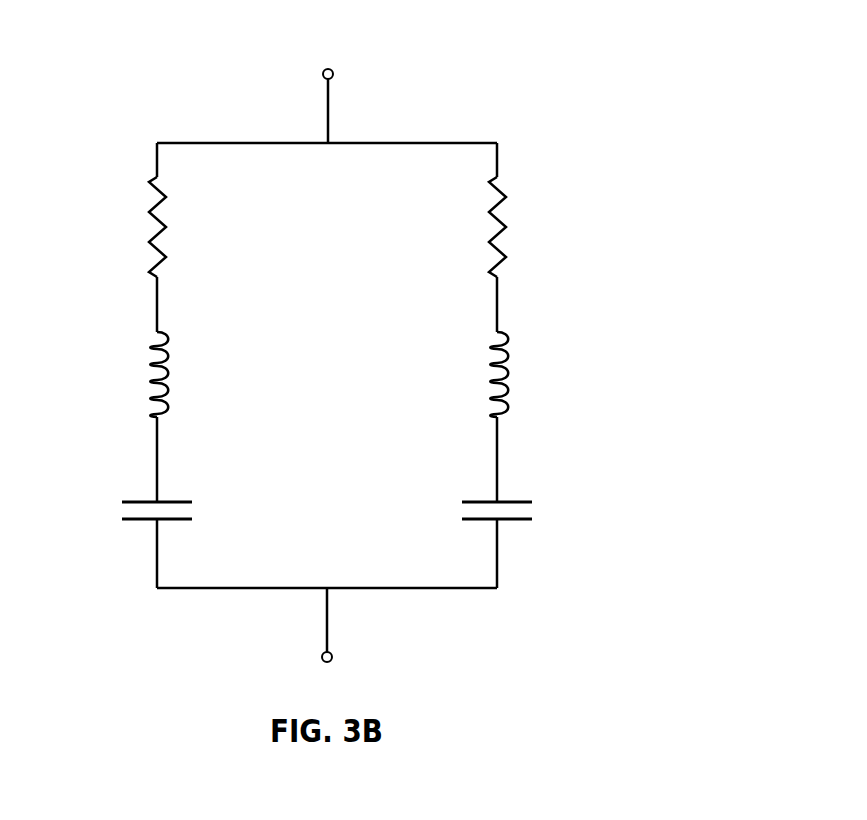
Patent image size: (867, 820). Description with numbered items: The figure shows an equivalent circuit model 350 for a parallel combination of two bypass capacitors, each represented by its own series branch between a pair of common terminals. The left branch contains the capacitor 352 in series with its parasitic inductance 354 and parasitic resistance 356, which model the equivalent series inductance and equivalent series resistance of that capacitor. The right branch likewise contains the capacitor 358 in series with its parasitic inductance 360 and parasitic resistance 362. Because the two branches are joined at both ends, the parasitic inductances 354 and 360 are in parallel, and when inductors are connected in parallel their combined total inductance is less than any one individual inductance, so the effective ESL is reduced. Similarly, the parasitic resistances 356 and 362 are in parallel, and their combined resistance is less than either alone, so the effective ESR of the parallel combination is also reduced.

The resonant circuit 350 is at (331, 338).
The capacitor 352 is at (138, 514).
The parasitic inductance 354 is at (138, 383).
The parasitic resistance 356 is at (138, 228).
The capacitor 358 is at (521, 514).
The parasitic inductance 360 is at (521, 383).
The parasitic resistance 362 is at (521, 228).